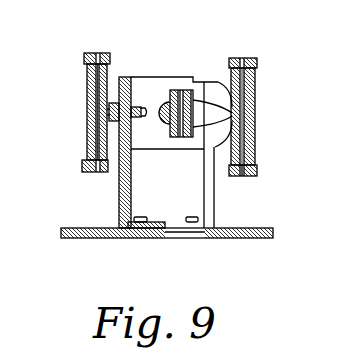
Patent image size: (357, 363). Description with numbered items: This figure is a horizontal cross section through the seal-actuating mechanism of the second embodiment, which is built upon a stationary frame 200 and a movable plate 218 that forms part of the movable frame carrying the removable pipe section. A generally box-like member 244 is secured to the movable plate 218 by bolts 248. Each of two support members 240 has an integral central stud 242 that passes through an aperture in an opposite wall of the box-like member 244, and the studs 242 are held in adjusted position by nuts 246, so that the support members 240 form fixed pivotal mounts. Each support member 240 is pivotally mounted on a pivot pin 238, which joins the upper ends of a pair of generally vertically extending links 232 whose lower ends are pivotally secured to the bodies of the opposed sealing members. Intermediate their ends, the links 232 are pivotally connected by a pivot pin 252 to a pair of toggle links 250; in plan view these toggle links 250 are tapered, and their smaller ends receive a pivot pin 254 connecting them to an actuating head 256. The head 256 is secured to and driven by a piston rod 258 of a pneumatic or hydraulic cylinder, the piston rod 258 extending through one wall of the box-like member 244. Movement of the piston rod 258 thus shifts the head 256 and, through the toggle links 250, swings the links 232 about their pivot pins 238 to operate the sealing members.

The stationary frame 200 is at (163, 252).
The plate 218 is at (241, 240).
The links 232 is at (84, 57).
The pivot pin 238 is at (94, 172).
The support member 240 is at (87, 90).
The central stud 242 is at (110, 100).
The box-like member 244 is at (151, 239).
The nuts 246 is at (133, 98).
The bolts 248 is at (187, 218).
The toggle links 250 is at (255, 98).
The pivot pin 252 is at (243, 176).
The pivot pin 254 is at (184, 138).
The actuating head 256 is at (166, 121).
The piston rod 258 is at (171, 137).